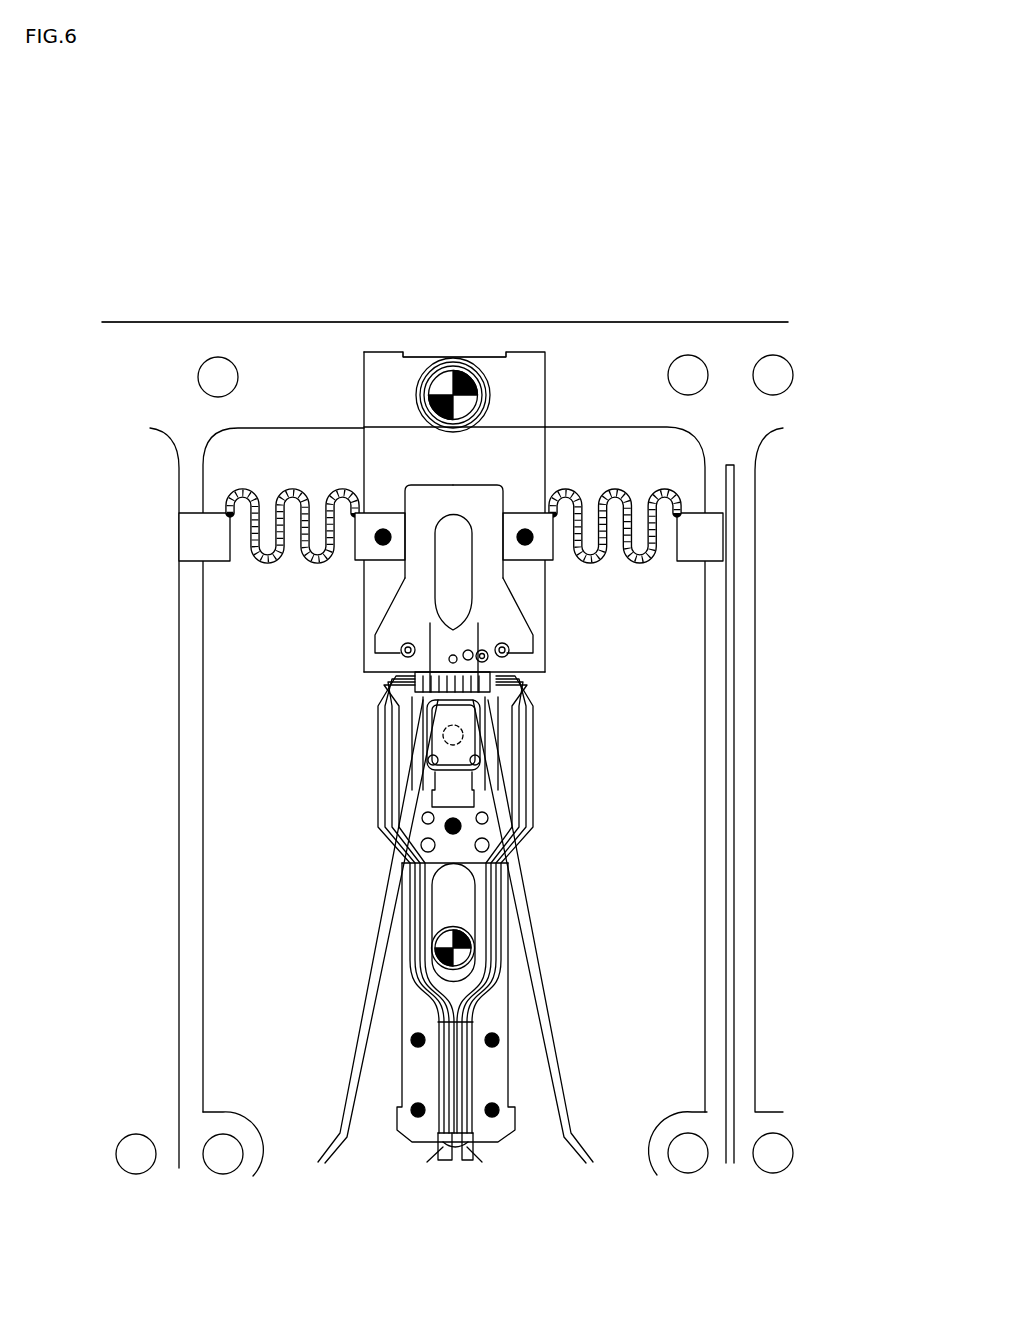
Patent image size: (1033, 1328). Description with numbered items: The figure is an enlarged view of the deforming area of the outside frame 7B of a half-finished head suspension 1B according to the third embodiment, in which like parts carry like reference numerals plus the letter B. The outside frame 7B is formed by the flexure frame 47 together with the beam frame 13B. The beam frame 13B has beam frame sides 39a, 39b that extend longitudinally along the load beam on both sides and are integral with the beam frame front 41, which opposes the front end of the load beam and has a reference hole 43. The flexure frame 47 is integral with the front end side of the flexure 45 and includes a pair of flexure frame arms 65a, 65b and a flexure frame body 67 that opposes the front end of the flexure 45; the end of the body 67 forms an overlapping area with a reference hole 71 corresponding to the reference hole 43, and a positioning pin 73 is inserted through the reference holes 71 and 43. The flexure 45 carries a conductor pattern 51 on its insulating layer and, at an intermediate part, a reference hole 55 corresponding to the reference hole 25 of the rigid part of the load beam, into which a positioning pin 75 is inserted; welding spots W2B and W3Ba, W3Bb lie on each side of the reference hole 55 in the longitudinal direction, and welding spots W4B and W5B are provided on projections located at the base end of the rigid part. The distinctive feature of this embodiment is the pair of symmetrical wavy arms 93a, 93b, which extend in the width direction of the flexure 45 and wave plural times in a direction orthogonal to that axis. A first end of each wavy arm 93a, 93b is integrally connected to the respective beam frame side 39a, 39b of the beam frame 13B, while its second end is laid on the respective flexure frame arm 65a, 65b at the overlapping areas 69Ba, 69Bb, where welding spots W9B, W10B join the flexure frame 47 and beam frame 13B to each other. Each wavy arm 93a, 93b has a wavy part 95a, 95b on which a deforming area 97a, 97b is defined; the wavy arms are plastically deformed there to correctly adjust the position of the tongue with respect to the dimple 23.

The head suspension 1B is at (712, 258).
The beam frame front 41 is at (260, 342).
The positioning pin 73 is at (422, 412).
The reference hole 43 is at (437, 385).
The reference hole 71 is at (450, 363).
The flexure frame body 67 is at (527, 362).
The outside frame 7B is at (558, 365).
The deforming area 97a is at (244, 488).
The deforming area 97b is at (613, 488).
The overlapping area 69Ba is at (382, 514).
The overlapping area 69Bb is at (535, 514).
The wavy arm 93a is at (193, 539).
The wavy arm 93b is at (723, 542).
The wavy part 95a is at (273, 567).
The wavy part 95b is at (645, 565).
The welding spot W9B is at (383, 540).
The welding spot W10B is at (527, 540).
The flexure frame arm 65a is at (380, 612).
The flexure frame arm 65b is at (540, 606).
The flexure frame 47 is at (547, 678).
The dimple 23 is at (443, 743).
The conductor pattern 51 is at (533, 790).
The welding spot W2B is at (412, 856).
The flexure 45 is at (523, 833).
The reference hole 55 is at (447, 875).
The reference hole 25 is at (457, 930).
The beam frame side 39a is at (181, 936).
The positioning pin 75 is at (437, 942).
The beam frame side 39b is at (722, 944).
The welding spot W3Ba is at (413, 1036).
The welding spot W3Bb is at (500, 1036).
The beam frame 13B is at (718, 1052).
The welding spot W4B is at (412, 1118).
The welding spot W5B is at (500, 1115).